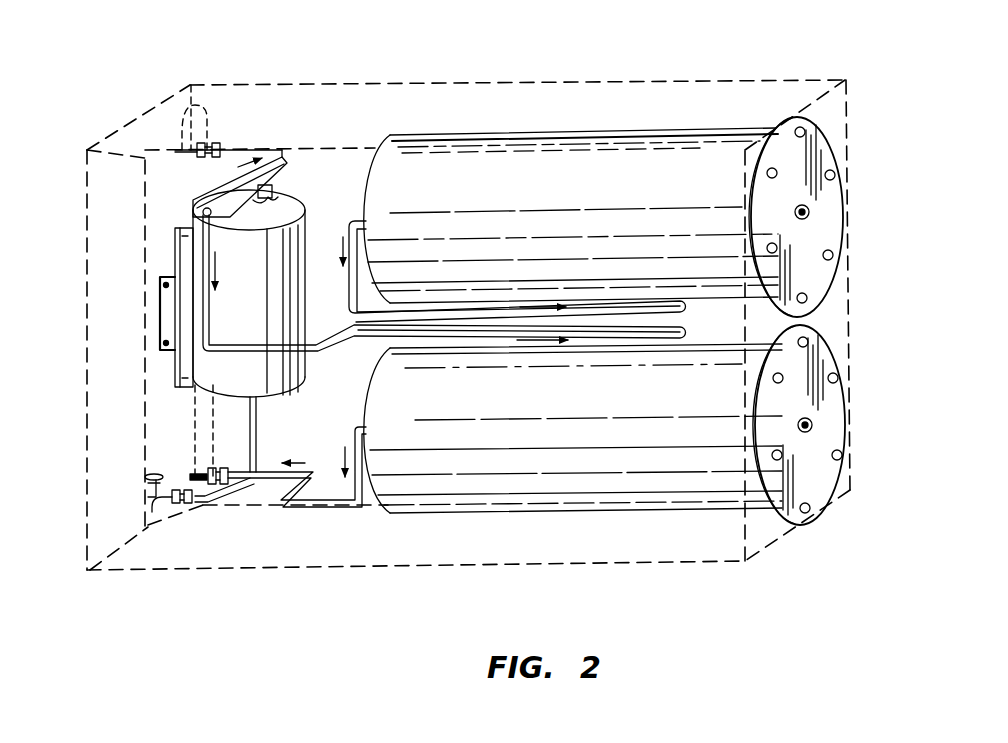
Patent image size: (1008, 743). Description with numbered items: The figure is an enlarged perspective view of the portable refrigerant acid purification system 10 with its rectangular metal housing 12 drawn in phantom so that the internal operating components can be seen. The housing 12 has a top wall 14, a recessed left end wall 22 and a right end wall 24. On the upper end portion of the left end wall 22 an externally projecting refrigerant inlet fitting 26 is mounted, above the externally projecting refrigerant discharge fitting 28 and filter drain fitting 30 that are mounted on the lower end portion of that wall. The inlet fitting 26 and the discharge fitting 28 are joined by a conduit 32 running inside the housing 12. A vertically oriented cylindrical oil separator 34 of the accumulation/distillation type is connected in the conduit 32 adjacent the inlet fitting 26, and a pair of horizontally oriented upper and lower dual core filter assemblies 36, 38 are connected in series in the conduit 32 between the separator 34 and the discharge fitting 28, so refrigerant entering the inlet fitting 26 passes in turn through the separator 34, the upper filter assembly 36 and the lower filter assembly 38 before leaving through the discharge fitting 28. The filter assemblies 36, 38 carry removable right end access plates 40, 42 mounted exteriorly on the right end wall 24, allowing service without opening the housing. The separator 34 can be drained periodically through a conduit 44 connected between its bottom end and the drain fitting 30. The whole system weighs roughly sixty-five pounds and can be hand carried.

The portable refrigerant acid purification system 10 is at (526, 66).
The rectangular metal housing 12 is at (85, 238).
The top wall 14 is at (362, 113).
The recessed left end wall 22 is at (207, 108).
The right end wall 24 is at (828, 120).
The refrigerant inlet fitting 26 is at (187, 160).
The refrigerant discharge fitting 28 is at (207, 470).
The filter drain fitting 30 is at (150, 508).
The conduit 32 is at (238, 350).
The oil separator 34 is at (258, 268).
The upper dual core filter assembly 36 is at (573, 200).
The lower dual core filter assembly 38 is at (578, 405).
The removable right end access plate 40 is at (820, 202).
The removable right end access plate 42 is at (817, 358).
The drain conduit 44 is at (257, 440).